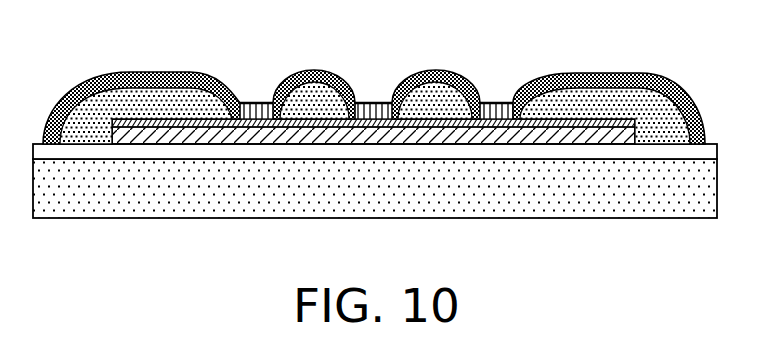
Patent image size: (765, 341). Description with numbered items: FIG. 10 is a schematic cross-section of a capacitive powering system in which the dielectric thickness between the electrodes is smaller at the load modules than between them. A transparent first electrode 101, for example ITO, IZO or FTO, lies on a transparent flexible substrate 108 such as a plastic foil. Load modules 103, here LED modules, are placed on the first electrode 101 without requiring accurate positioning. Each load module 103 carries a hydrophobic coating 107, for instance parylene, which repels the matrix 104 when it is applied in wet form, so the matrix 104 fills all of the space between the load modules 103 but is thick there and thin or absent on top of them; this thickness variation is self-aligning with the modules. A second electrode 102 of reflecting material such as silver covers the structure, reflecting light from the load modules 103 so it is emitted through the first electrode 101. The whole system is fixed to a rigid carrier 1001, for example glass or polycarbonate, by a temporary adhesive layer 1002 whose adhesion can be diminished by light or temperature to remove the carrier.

The first electrode 101 is at (562, 130).
The second electrode 102 is at (430, 70).
The load module 103 is at (245, 105).
The matrix 104 is at (315, 90).
The hydrophobic coating 107 is at (262, 103).
The transparent flexible substrate 108 is at (605, 143).
The rigid carrier 1001 is at (580, 200).
The adhesive layer 1002 is at (647, 153).